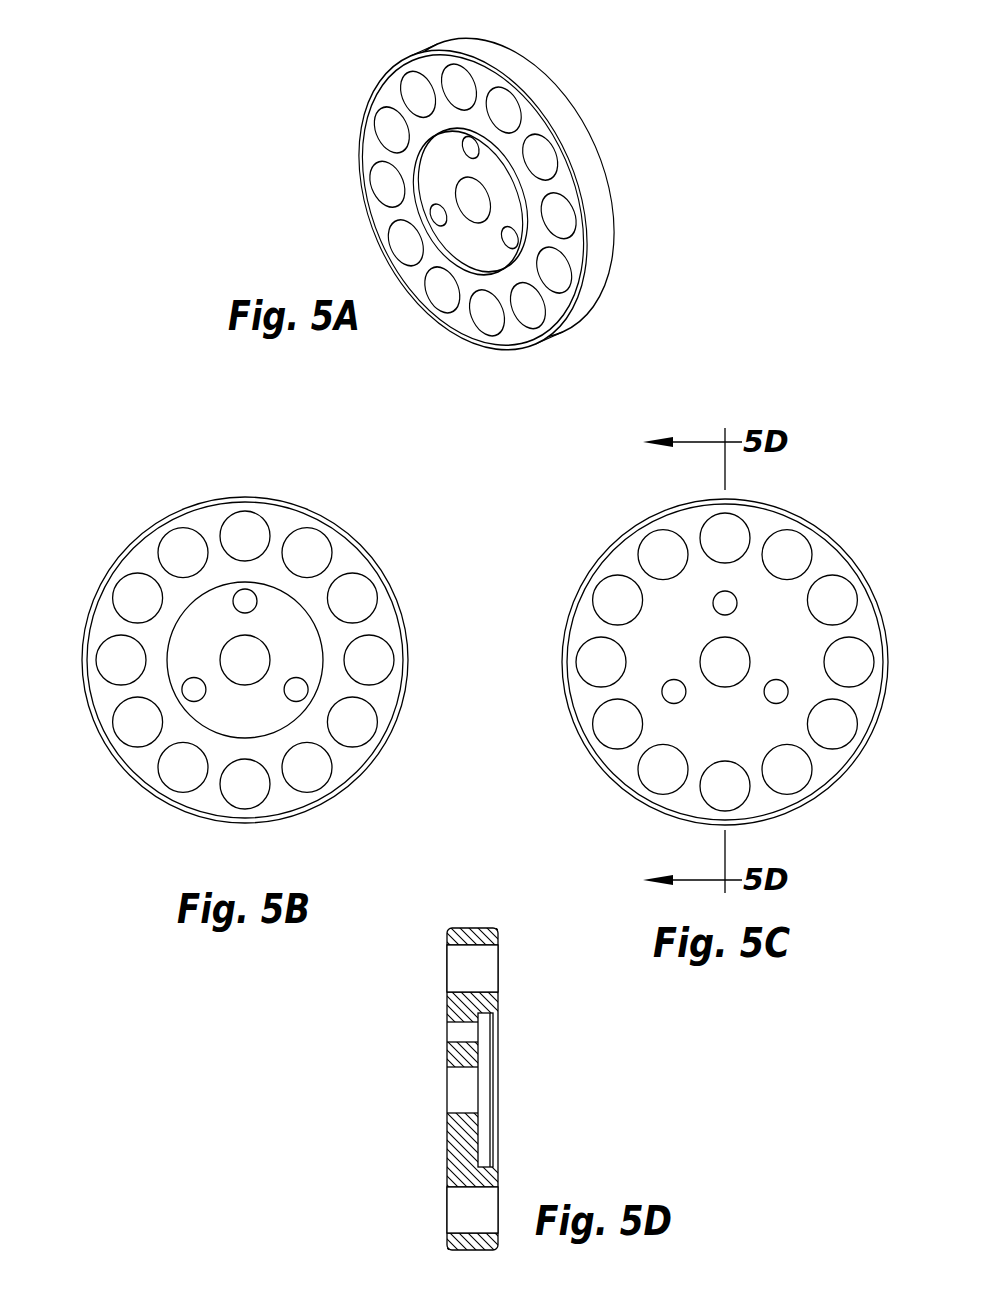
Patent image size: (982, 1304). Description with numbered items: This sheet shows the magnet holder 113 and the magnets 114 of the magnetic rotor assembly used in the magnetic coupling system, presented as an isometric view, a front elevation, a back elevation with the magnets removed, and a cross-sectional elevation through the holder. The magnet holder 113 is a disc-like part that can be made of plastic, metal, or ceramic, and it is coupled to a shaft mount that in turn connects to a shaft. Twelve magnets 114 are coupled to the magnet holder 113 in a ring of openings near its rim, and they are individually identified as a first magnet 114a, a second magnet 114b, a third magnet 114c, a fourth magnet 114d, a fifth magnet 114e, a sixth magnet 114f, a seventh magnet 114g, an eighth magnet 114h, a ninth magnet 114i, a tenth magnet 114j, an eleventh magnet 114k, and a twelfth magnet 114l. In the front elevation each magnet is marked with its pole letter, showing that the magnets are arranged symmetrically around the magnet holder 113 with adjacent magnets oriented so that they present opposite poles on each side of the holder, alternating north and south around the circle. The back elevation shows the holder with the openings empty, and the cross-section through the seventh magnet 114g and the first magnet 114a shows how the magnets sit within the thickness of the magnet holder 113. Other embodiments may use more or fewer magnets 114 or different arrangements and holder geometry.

In FIG. 5A, the magnet holder 113 is at (358, 188).
In FIG. 5B, the magnet holder 113 is at (222, 498).
In FIG. 5C, the magnet holder 113 is at (670, 507).
In FIG. 5D, the magnet holder 113 is at (480, 930).
In FIG. 5A, the magnets 114 is at (314, 124).
In FIG. 5C, the magnets 114 is at (864, 505).
In FIG. 5B, the first magnet 114a is at (258, 790).
In FIG. 5D, the first magnet 114a is at (458, 1217).
In FIG. 5B, the second magnet 114b is at (178, 780).
In FIG. 5B, the third magnet 114c is at (137, 733).
In FIG. 5B, the fourth magnet 114d is at (115, 673).
In FIG. 5B, the fifth magnet 114e is at (123, 593).
In FIG. 5B, the sixth magnet 114f is at (168, 547).
In FIG. 5B, the seventh magnet 114g is at (243, 517).
In FIG. 5D, the seventh magnet 114g is at (457, 967).
In FIG. 5B, the eighth magnet 114h is at (310, 533).
In FIG. 5B, the ninth magnet 114i is at (365, 598).
In FIG. 5B, the tenth magnet 114j is at (383, 667).
In FIG. 5B, the eleventh magnet 114k is at (370, 723).
In FIG. 5B, the twelfth magnet 114l is at (327, 765).